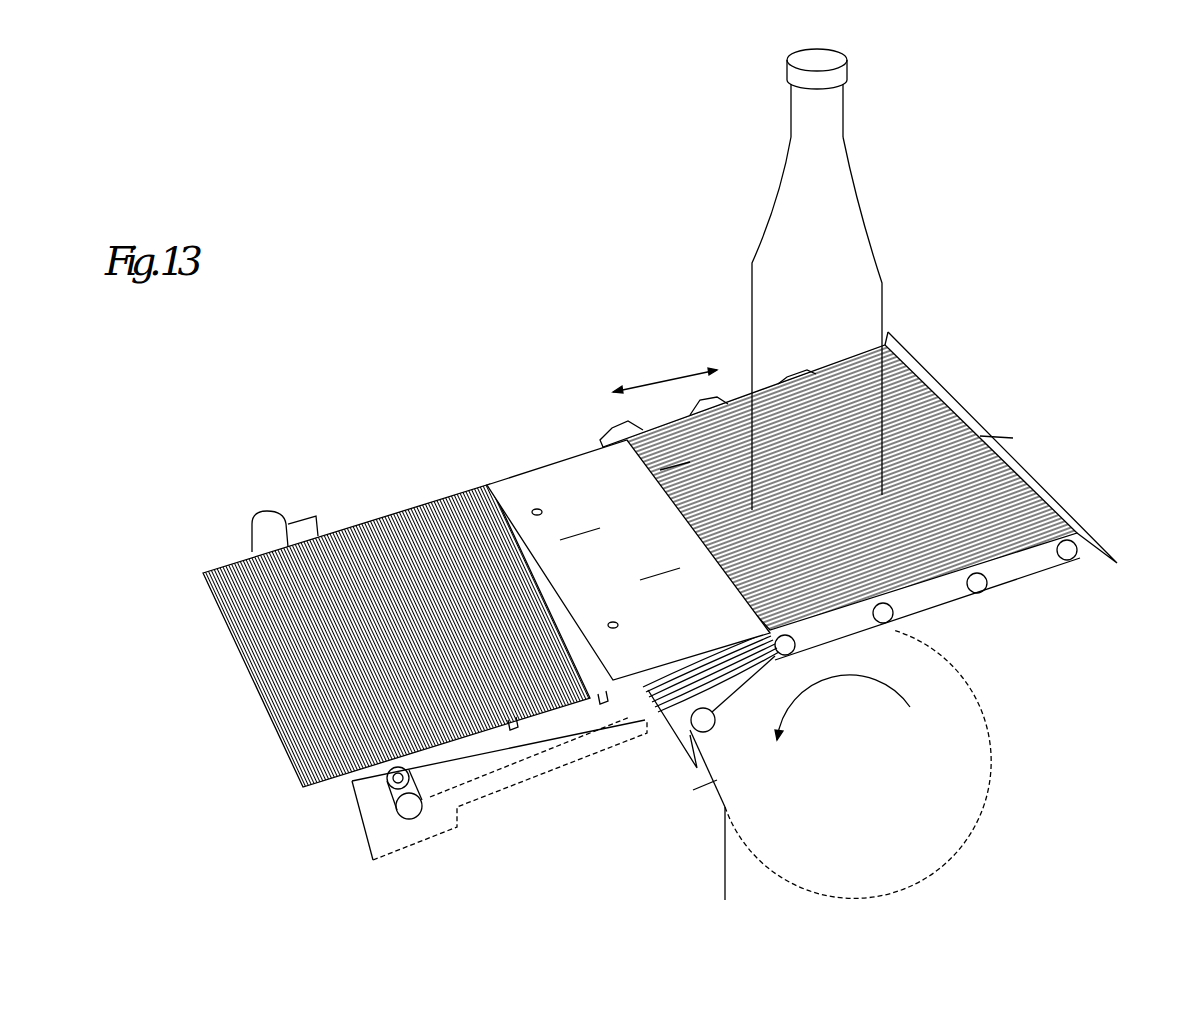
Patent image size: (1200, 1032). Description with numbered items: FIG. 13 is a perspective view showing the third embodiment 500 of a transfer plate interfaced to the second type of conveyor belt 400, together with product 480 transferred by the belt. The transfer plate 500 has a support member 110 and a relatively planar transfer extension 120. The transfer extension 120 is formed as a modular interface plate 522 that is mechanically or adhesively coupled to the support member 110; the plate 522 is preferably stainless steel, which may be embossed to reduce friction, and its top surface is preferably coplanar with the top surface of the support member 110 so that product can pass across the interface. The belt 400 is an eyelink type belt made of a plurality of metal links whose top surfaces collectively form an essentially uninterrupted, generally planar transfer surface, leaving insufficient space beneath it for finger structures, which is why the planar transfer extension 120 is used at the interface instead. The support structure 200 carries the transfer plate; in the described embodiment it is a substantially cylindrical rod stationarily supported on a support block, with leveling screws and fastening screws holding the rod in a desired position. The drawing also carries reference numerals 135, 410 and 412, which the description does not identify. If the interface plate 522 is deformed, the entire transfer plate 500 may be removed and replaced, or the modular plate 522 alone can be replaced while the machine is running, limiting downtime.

The support member 110 is at (357, 550).
The transfer extension 120 is at (623, 521).
The direction of travel 135 is at (665, 375).
The support structure 200 is at (347, 823).
The second type of conveyor belt 400 is at (885, 550).
The drum 410 is at (963, 737).
The drive roller 412 is at (887, 675).
The bottle 480 is at (863, 197).
The third embodiment of a transfer plate 500 is at (425, 613).
The modular interface plate 522 is at (509, 459).